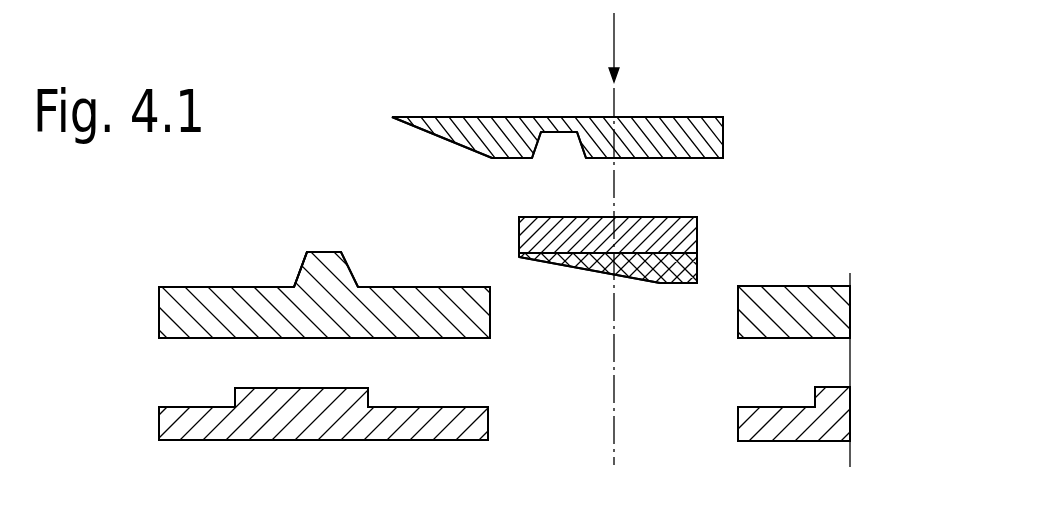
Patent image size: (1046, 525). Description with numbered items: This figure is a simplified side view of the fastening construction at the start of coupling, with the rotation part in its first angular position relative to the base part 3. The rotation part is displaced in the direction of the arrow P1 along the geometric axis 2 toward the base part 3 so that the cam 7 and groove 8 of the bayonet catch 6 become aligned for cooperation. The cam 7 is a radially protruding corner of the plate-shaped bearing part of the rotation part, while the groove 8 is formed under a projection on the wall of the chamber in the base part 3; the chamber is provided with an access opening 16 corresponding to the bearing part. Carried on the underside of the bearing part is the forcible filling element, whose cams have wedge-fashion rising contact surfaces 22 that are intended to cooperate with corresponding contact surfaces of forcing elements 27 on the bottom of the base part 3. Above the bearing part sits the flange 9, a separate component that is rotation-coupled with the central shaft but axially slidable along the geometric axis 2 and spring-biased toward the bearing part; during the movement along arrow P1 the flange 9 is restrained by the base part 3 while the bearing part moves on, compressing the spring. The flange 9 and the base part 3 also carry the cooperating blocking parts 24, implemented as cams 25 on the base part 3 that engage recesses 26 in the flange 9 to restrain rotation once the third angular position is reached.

The geometric axis 2 is at (615, 103).
The flange 9 is at (702, 121).
The recesses 26 is at (555, 133).
The blocking parts 24 is at (558, 143).
The bayonet catch 6 is at (505, 145).
The cam 7 is at (688, 230).
The contact surfaces 22 is at (573, 257).
The base part 3 is at (508, 361).
The cams 25 is at (335, 272).
The forcing elements 27 is at (272, 393).
The access opening 16 is at (679, 356).
The groove 8 is at (782, 380).
The arrow P1 is at (629, 42).